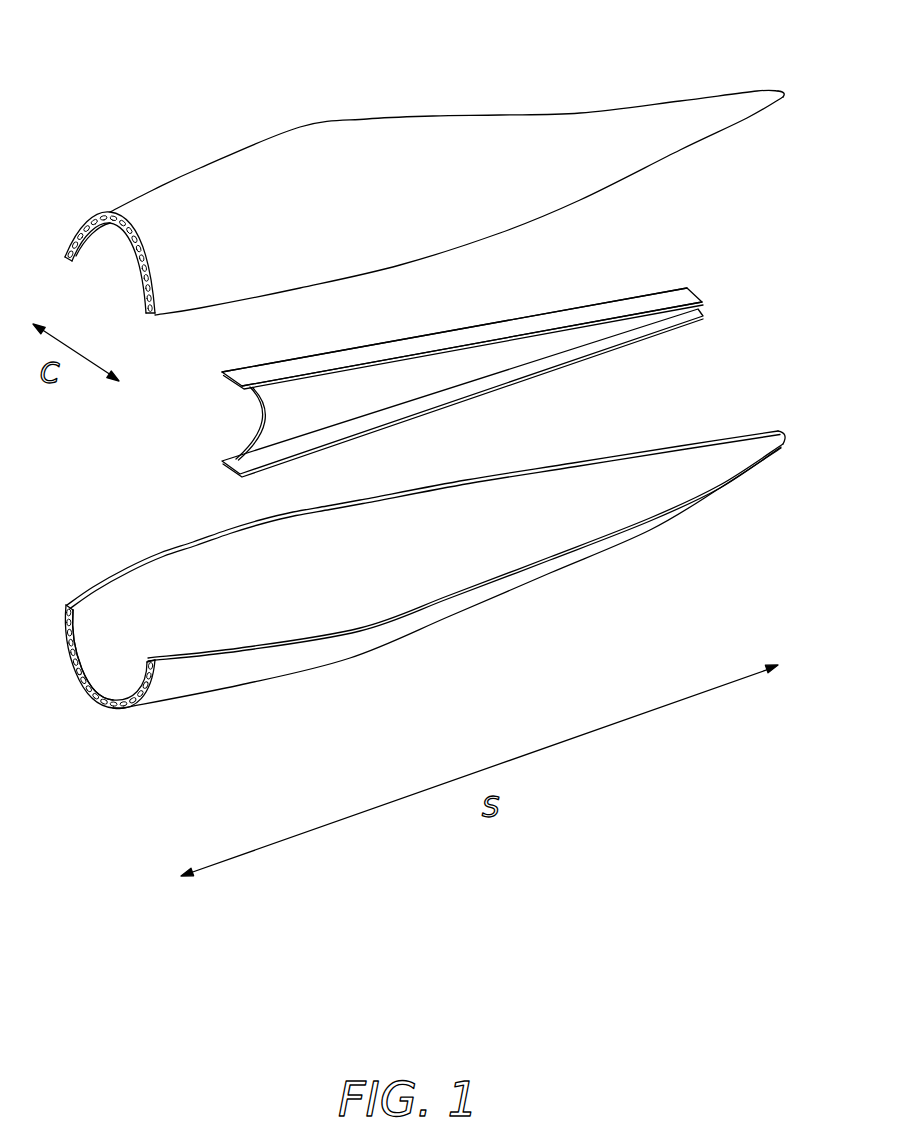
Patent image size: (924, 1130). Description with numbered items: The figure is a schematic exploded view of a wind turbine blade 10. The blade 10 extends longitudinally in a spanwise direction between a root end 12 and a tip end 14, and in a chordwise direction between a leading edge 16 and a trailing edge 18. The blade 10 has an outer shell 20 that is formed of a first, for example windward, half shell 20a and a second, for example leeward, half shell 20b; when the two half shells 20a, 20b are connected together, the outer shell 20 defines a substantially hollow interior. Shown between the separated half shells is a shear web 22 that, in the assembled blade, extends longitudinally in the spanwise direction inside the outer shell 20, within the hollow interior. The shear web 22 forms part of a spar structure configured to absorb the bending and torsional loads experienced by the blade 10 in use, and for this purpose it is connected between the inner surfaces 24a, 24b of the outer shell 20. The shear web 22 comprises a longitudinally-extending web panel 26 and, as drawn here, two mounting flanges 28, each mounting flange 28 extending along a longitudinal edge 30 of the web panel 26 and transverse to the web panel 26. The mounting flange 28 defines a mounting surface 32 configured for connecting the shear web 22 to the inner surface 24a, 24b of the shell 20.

The wind turbine blade 10 is at (128, 61).
The root end 12 is at (88, 571).
The tip end 14 is at (792, 133).
The leading edge 16 is at (570, 205).
The trailing edge 18 is at (80, 262).
The outer shell 20 is at (128, 158).
The first half shell 20a is at (507, 106).
The second half shell 20b is at (290, 690).
The shear web 22 is at (492, 417).
The inner surface of first half shell 24a is at (100, 232).
The inner surface of second half shell 24b is at (193, 578).
The web panel 26 is at (273, 414).
The mounting flange 28 is at (474, 318).
The longitudinal edge 30 is at (304, 382).
The mounting surface 32 is at (395, 346).